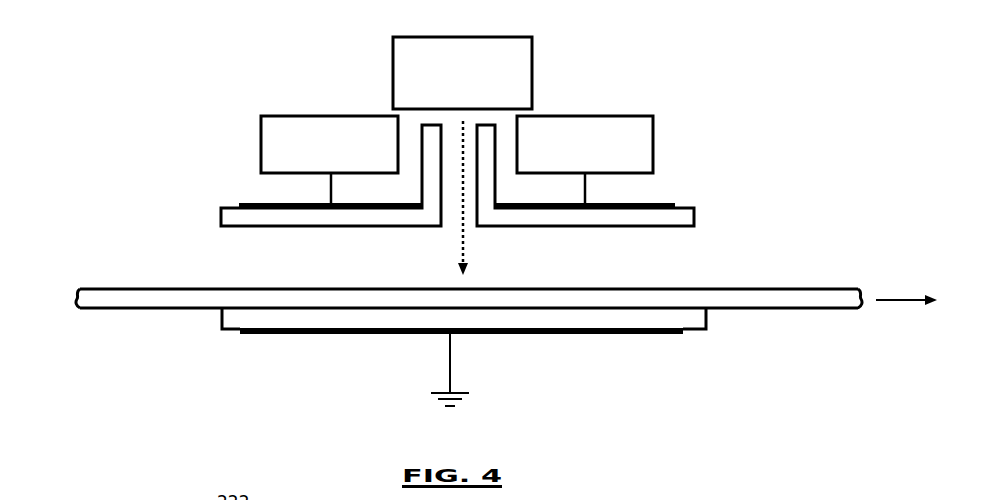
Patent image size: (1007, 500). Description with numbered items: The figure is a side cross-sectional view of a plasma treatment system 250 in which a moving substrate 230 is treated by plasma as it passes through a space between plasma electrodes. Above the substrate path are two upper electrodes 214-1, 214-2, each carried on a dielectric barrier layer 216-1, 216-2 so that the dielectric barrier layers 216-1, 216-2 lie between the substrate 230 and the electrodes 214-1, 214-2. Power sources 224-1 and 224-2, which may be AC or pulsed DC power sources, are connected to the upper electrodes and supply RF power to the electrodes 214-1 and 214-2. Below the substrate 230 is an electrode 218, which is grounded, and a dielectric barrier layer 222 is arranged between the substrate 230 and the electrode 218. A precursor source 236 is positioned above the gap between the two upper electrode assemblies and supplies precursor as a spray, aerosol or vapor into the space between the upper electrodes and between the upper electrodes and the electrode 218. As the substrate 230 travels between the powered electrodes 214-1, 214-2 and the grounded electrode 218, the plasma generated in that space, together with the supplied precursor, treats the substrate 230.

The plasma treatment system 250 is at (137, 99).
The precursor source 236 is at (497, 37).
The power source 224-1 is at (287, 116).
The power source 224-2 is at (600, 116).
The electrode 214-1 is at (262, 203).
The electrode 214-2 is at (650, 203).
The dielectric barrier layer 216-1 is at (219, 216).
The dielectric barrier layer 216-2 is at (696, 217).
The substrate 230 is at (808, 289).
The dielectric barrier layer 222 is at (707, 330).
The electrode 218 is at (513, 334).